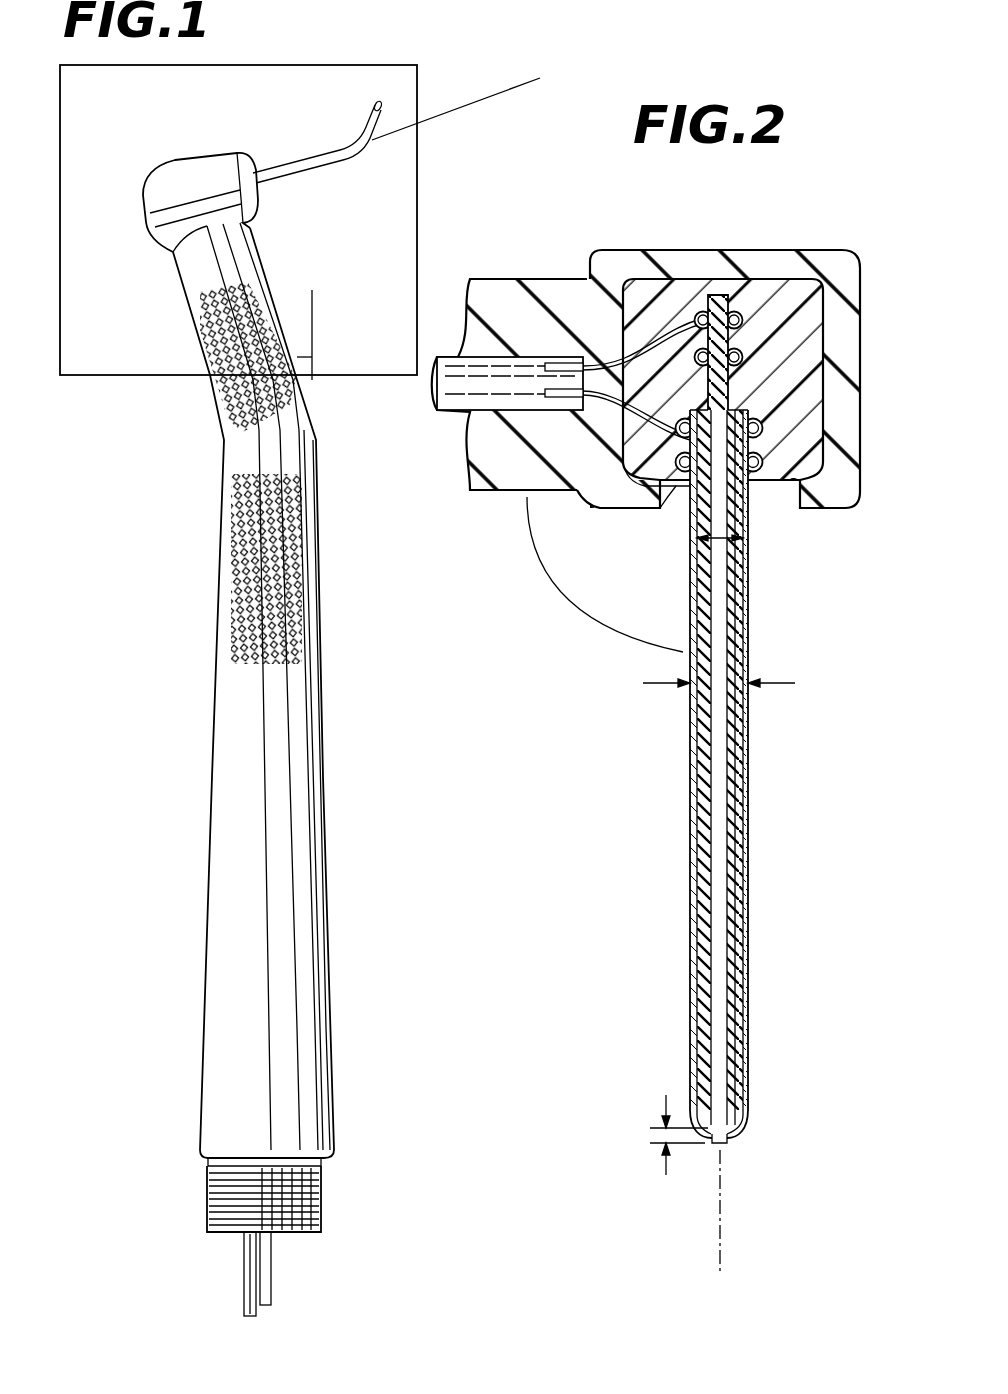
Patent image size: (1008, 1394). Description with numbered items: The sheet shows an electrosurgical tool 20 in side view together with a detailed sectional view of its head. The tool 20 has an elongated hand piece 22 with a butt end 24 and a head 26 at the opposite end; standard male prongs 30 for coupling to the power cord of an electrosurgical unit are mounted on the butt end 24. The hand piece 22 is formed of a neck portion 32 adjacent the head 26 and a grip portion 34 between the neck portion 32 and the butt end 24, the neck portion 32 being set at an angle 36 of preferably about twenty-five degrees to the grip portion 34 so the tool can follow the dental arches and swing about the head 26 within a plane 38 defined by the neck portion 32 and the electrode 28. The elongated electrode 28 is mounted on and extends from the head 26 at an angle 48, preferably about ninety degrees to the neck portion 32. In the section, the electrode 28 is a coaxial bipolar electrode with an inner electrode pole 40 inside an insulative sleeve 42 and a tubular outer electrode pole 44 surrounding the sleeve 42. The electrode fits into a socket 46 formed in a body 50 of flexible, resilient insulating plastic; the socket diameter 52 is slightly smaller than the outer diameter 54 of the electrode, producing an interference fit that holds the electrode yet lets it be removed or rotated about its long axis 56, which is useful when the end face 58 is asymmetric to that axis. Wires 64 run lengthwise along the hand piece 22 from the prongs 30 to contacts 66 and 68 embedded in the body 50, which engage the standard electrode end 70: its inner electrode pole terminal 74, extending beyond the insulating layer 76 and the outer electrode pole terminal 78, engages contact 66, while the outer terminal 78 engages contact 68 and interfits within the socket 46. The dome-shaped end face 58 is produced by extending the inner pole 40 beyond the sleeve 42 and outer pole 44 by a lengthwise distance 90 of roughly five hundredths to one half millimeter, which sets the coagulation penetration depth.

In FIG. 1, the electrosurgical tool 20 is at (182, 404).
In FIG. 1, the hand piece 22 is at (227, 672).
In FIG. 1, the butt end 24 is at (207, 1190).
In FIG. 1, the head 26 is at (168, 170).
In FIG. 2, the head 26 is at (630, 255).
In FIG. 1, the electrode 28 is at (310, 172).
In FIG. 2, the electrode 28 is at (748, 718).
In FIG. 1, the male prongs 30 is at (271, 1291).
In FIG. 1, the neck portion 32 is at (198, 302).
In FIG. 2, the neck portion 32 is at (513, 473).
In FIG. 1, the grip portion 34 is at (222, 582).
In FIG. 1, the angle 36 is at (298, 356).
In FIG. 1, the plane 38 is at (368, 365).
In FIG. 2, the inner electrode pole 40 is at (717, 882).
In FIG. 2, the insulative sleeve 42 is at (733, 972).
In FIG. 2, the outer electrode pole 44 is at (750, 1037).
In FIG. 2, the socket 46 is at (643, 492).
In FIG. 2, the angle 48 is at (567, 606).
In FIG. 2, the body 50 is at (803, 442).
In FIG. 2, the socket diameter 52 is at (700, 560).
In FIG. 2, the outer diameter 54 is at (777, 683).
In FIG. 1, the long axis 56 is at (443, 118).
In FIG. 2, the long axis 56 is at (723, 1213).
In FIG. 1, the end face 58 is at (381, 100).
In FIG. 2, the end face 58 is at (733, 1135).
In FIG. 2, the wires 64 is at (575, 392).
In FIG. 2, the contact 66 is at (742, 326).
In FIG. 2, the contact 68 is at (746, 512).
In FIG. 2, the standard electrode end 70 is at (736, 372).
In FIG. 2, the inner electrode pole terminal 74 is at (717, 294).
In FIG. 2, the insulating layer 76 is at (667, 507).
In FIG. 2, the outer electrode pole terminal 78 is at (747, 528).
In FIG. 2, the lengthwise distance 90 is at (648, 1132).